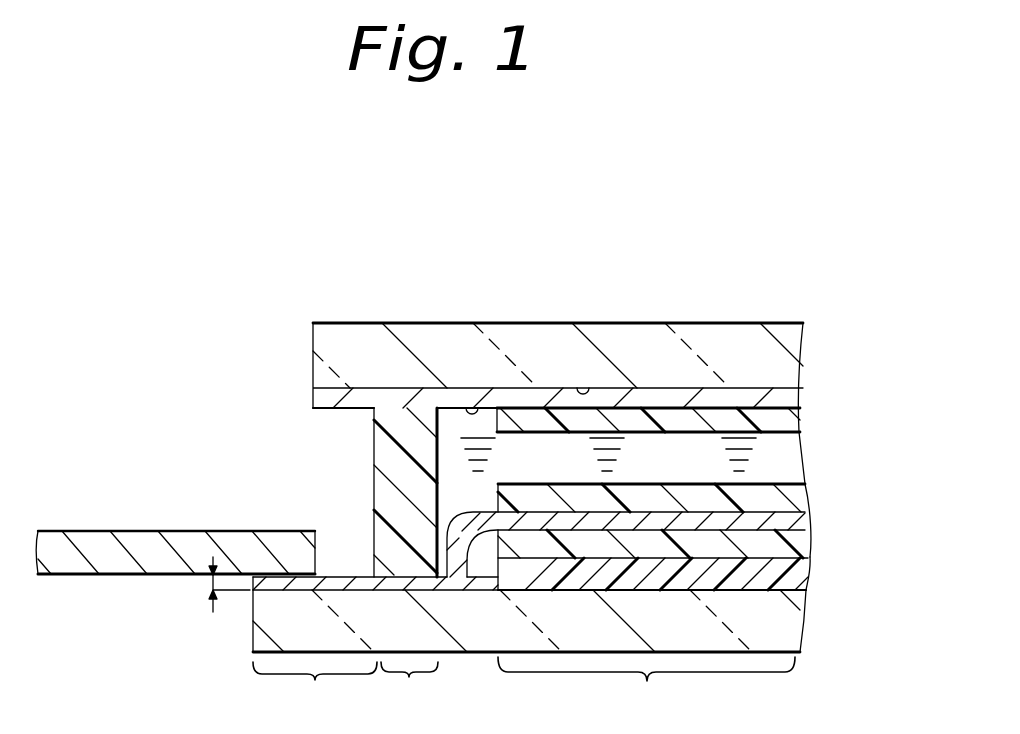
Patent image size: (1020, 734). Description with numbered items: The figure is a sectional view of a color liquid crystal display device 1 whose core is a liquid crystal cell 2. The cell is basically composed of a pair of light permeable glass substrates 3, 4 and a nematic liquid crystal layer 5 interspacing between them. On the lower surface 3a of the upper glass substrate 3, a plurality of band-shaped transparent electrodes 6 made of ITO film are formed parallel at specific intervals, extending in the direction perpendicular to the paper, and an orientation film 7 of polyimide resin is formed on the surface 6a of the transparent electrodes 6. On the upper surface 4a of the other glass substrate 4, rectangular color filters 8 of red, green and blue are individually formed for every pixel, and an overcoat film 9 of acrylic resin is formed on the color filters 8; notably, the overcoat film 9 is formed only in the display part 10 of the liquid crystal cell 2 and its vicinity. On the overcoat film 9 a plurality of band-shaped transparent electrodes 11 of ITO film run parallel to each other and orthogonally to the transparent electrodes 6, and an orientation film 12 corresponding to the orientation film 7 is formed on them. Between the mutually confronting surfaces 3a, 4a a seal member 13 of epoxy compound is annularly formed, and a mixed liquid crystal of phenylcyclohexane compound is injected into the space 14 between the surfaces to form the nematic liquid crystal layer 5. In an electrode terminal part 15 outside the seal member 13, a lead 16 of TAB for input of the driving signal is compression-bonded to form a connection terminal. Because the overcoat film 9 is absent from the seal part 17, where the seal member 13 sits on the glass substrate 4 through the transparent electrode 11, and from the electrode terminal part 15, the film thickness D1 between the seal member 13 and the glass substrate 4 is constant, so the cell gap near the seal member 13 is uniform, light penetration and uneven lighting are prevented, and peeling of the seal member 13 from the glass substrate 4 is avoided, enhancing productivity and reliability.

The color liquid crystal display device 1 is at (148, 183).
The liquid crystal cell 2 is at (479, 222).
The glass substrate 3 is at (348, 335).
The lower surface 3a is at (580, 388).
The glass substrate 4 is at (790, 634).
The upper surface 4a is at (795, 579).
The nematic liquid crystal layer 5 is at (793, 458).
The transparent electrodes 6 is at (716, 398).
The surface of the transparent electrodes 6a is at (469, 404).
The orientation film 7 is at (785, 422).
The color filters 8 is at (807, 567).
The overcoat film 9 is at (803, 542).
The display part 10 is at (646, 695).
The transparent electrodes 11 is at (802, 525).
The orientation film 12 is at (800, 498).
The seal member 13 is at (385, 457).
The space 14 is at (635, 451).
The electrode terminal part 15 is at (315, 698).
The lead 16 is at (137, 545).
The seal part 17 is at (409, 698).
The film thickness D1 is at (212, 584).